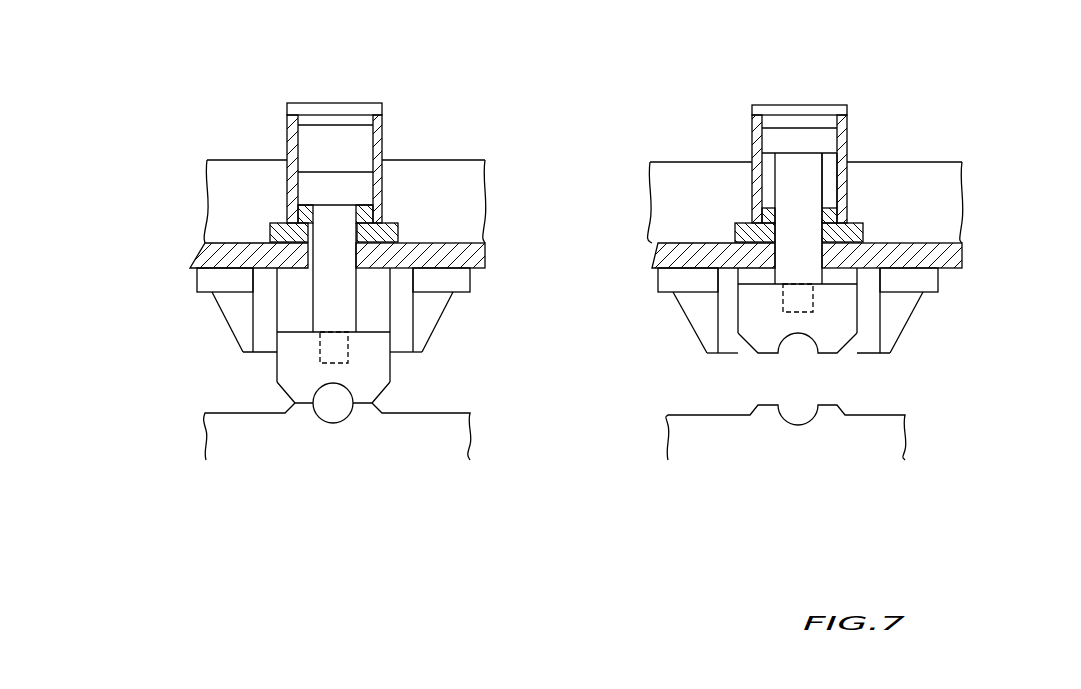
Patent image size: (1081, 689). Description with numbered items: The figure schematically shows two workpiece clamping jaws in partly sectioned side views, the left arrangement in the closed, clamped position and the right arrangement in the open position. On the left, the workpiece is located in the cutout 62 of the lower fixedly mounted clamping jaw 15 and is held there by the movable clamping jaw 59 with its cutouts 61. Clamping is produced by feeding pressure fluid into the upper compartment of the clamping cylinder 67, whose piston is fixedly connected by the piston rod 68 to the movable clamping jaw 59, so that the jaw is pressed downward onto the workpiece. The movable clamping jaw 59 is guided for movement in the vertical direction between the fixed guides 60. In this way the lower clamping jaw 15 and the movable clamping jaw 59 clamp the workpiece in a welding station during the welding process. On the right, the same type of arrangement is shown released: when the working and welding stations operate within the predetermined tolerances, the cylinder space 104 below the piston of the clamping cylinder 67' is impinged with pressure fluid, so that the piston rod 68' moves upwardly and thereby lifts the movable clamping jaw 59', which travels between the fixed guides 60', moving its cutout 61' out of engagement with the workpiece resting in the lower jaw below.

The clamping cylinder 67 is at (270, 138).
The piston rod 68 is at (249, 252).
The fixed guides 60 is at (305, 310).
The movable clamping jaw 59 is at (265, 325).
The cutouts 61 is at (265, 386).
The lower fixedly mounted clamping jaw 15 is at (283, 438).
The cutout 62 is at (342, 422).
The clamping cylinder 67' is at (884, 135).
The cylinder space 104 is at (828, 185).
The piston rod 68' is at (904, 218).
The fixed guides 60' is at (845, 310).
The movable clamping jaw 59' is at (885, 305).
The cutout 61' is at (885, 365).